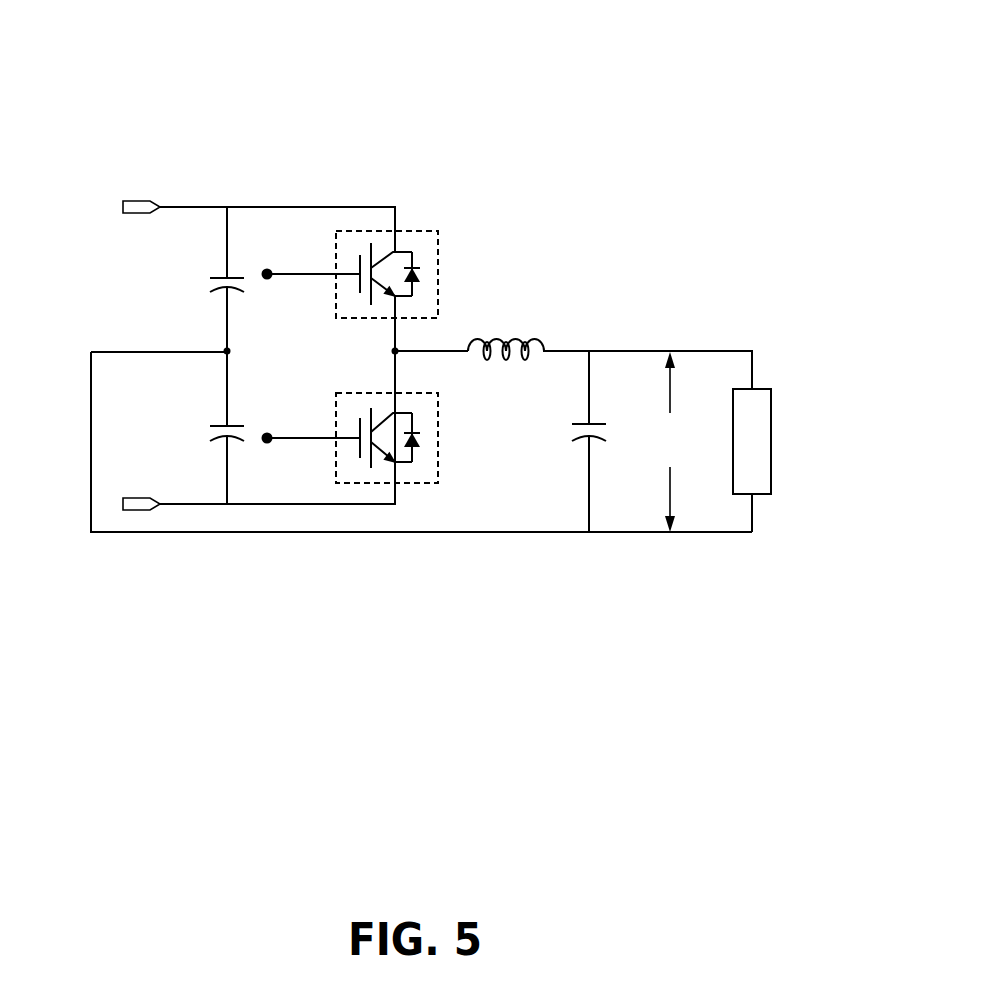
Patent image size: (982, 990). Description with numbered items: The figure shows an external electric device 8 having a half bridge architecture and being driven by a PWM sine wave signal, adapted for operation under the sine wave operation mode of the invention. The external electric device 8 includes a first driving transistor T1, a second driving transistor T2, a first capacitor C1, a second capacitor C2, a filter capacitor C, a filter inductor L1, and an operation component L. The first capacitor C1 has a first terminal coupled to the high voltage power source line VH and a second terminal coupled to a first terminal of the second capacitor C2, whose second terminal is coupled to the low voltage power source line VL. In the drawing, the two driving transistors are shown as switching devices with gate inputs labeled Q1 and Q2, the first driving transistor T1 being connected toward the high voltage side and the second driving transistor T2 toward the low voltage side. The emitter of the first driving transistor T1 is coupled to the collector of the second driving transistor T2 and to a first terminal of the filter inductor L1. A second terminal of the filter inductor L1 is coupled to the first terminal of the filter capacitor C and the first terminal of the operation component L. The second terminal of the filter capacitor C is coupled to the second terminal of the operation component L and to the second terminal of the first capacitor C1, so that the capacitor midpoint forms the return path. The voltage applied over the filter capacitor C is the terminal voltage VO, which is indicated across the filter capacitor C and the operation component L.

The external electric device 8 is at (714, 111).
The high voltage power source line VH is at (136, 190).
The low voltage power source line VL is at (137, 487).
The first capacitor C1 is at (206, 279).
The second capacitor C2 is at (206, 429).
The first gate control signal Q1 is at (308, 258).
The second gate control signal Q2 is at (308, 422).
The first driving transistor T1 is at (427, 229).
The second driving transistor T2 is at (427, 485).
The filter inductor L1 is at (506, 331).
The filter capacitor C is at (573, 429).
The terminal voltage VO is at (672, 442).
The operation component L is at (752, 441).